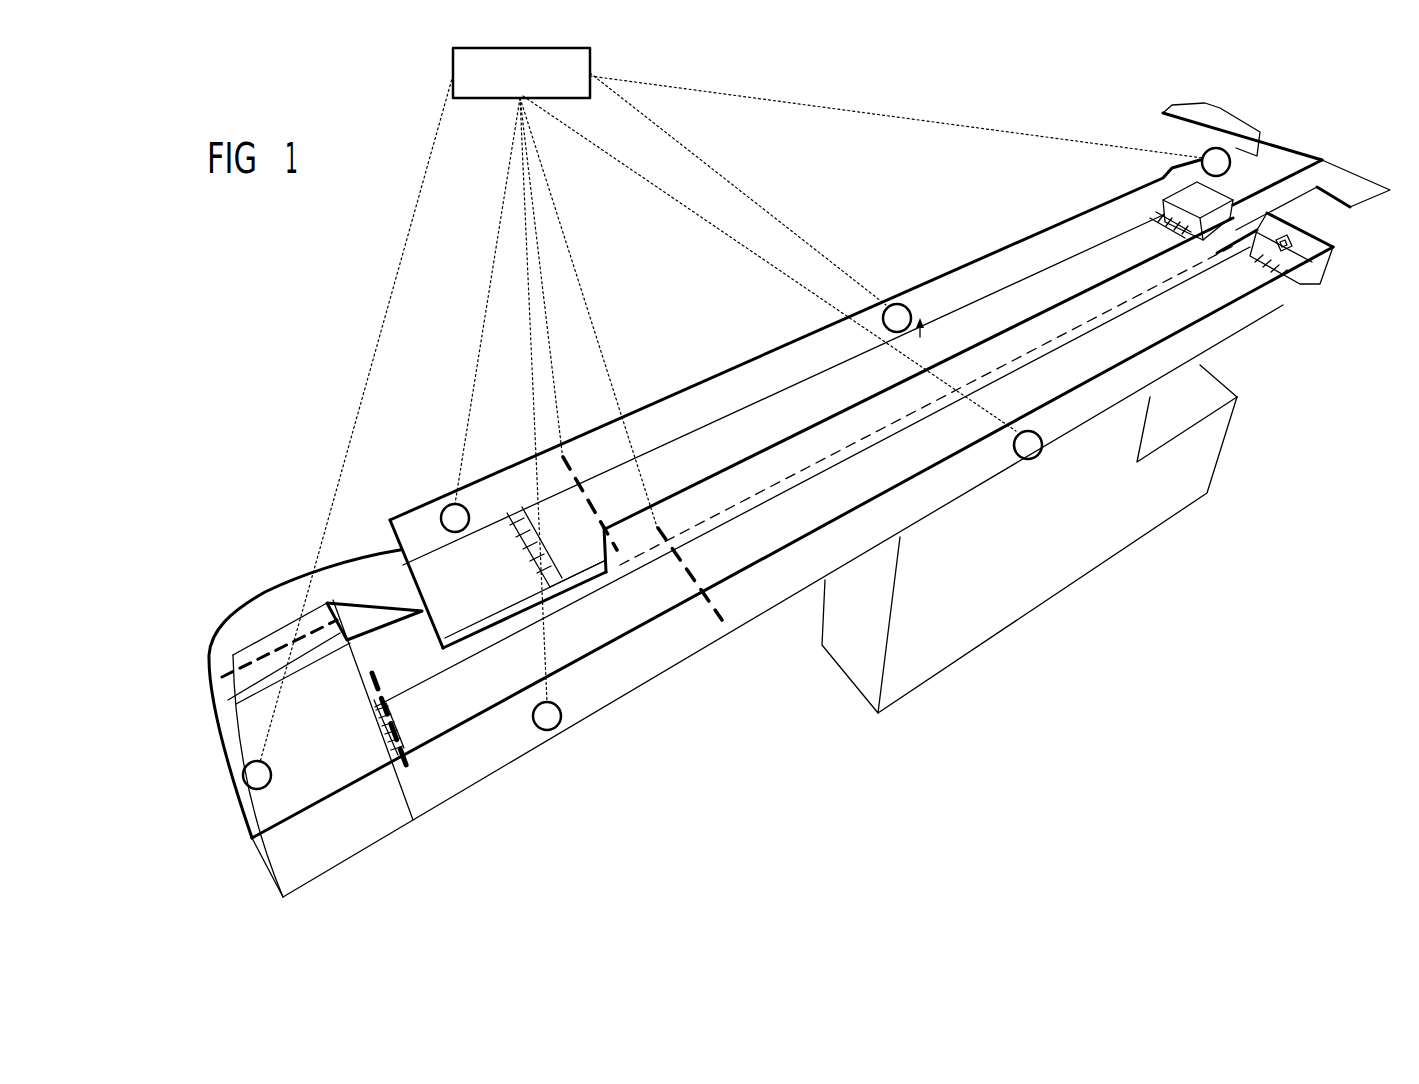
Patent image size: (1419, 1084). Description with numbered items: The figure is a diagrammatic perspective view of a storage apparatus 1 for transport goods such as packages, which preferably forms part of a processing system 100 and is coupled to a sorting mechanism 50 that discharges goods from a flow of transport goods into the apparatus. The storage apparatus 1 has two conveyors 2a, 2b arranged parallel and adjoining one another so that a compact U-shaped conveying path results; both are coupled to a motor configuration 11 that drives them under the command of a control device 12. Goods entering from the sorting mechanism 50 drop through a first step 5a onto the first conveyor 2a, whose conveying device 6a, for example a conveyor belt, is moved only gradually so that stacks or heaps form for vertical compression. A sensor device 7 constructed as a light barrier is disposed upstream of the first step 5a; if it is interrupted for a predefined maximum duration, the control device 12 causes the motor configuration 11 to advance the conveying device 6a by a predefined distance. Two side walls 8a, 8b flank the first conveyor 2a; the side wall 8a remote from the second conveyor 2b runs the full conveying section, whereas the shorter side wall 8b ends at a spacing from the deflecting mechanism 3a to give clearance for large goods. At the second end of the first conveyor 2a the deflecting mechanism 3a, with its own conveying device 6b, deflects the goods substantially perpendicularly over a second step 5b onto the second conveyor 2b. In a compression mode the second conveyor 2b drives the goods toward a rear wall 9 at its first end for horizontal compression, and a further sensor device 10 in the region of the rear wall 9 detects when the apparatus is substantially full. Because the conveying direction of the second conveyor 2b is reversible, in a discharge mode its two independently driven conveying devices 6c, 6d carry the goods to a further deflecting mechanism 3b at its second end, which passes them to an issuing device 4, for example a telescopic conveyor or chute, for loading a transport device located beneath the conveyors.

The storage apparatus 1 is at (346, 388).
The first conveyor 2a is at (795, 407).
The second conveyor 2b is at (720, 578).
The deflecting mechanism 3a is at (477, 547).
The further deflecting mechanism 3b is at (273, 759).
The issuing device 4 is at (297, 617).
The first step 5a is at (1160, 212).
The second step 5b is at (497, 628).
The conveying device 6a is at (920, 320).
The conveying device 6b is at (440, 506).
The conveying device 6c is at (432, 716).
The conveying device 6d is at (1008, 400).
The sensor device 7 is at (1197, 186).
The side wall 8a is at (627, 433).
The side wall 8b is at (940, 365).
The rear wall 9 is at (1283, 250).
The further sensor device 10 is at (1302, 250).
The motor configuration 11 is at (1222, 150).
The control device 12 is at (590, 67).
The sorting mechanism 50 is at (1340, 212).
The processing system 100 is at (590, 74).